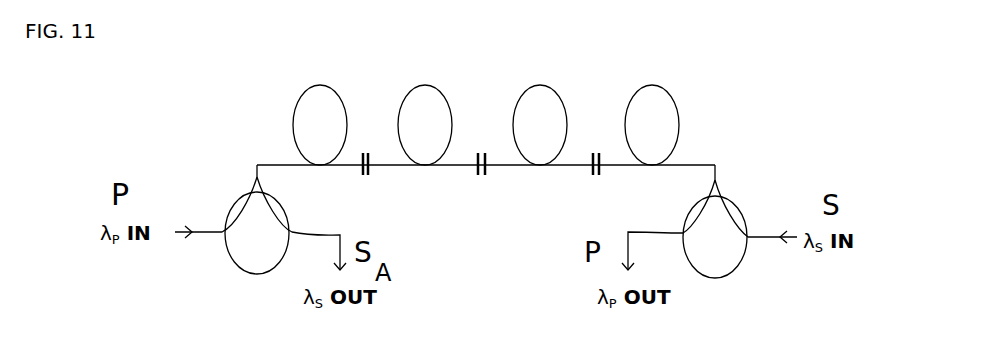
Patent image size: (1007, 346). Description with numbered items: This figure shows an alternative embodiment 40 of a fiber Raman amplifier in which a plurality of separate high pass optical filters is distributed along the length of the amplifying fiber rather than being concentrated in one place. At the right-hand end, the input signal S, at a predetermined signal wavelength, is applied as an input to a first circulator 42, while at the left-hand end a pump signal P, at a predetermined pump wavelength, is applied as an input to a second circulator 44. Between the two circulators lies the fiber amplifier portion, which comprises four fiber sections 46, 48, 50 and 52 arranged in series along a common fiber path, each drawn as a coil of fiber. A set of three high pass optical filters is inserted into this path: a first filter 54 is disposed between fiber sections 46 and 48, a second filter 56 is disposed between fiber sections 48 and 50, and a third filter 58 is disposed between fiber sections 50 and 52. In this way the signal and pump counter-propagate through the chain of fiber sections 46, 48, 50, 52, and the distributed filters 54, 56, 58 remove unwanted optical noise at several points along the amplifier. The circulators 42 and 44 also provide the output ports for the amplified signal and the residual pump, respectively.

The alternative embodiment 40 is at (50, 129).
The first circulator 42 is at (735, 215).
The second circulator 44 is at (230, 212).
The fiber section 46 is at (680, 112).
The fiber section 48 is at (550, 92).
The fiber section 50 is at (412, 90).
The fiber section 52 is at (293, 112).
The first filter 54 is at (597, 150).
The second filter 56 is at (480, 150).
The third filter 58 is at (366, 150).